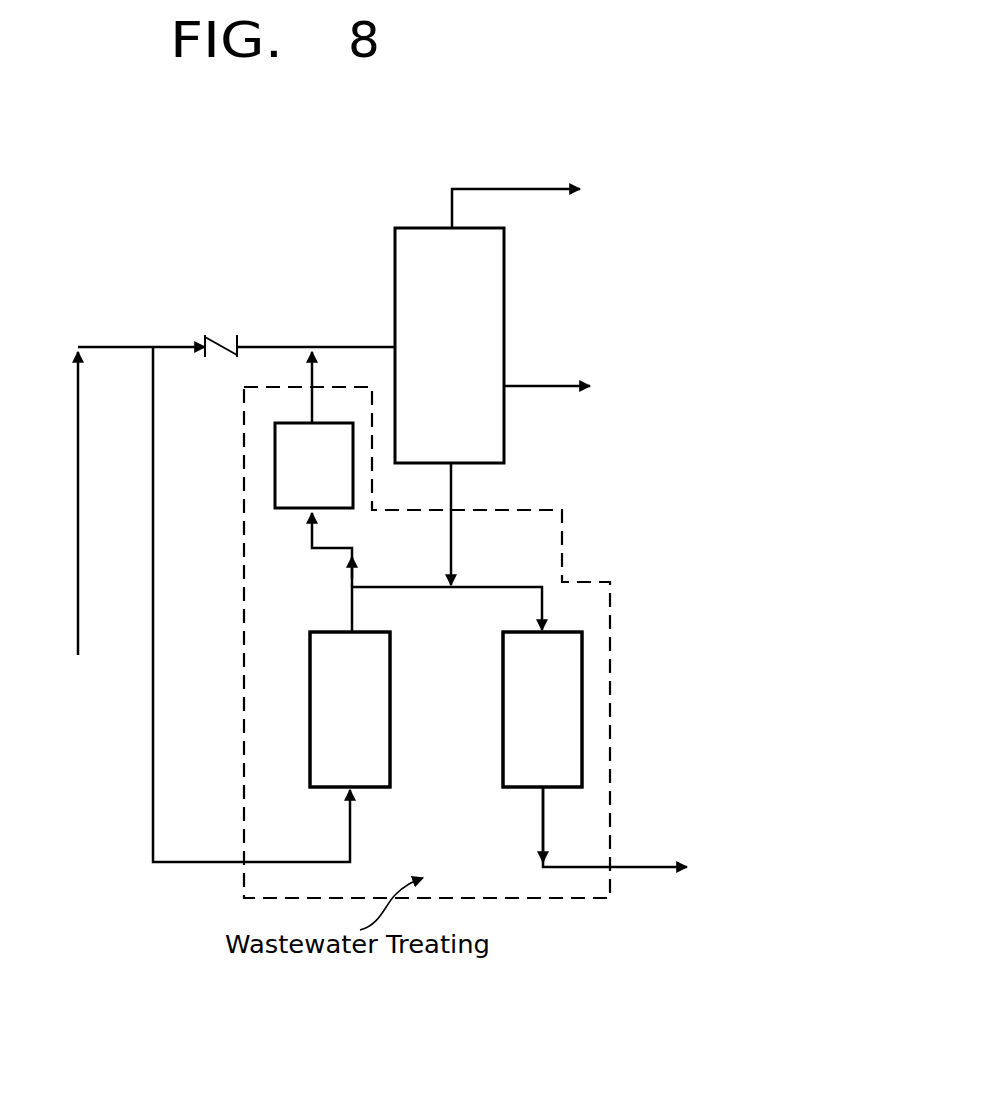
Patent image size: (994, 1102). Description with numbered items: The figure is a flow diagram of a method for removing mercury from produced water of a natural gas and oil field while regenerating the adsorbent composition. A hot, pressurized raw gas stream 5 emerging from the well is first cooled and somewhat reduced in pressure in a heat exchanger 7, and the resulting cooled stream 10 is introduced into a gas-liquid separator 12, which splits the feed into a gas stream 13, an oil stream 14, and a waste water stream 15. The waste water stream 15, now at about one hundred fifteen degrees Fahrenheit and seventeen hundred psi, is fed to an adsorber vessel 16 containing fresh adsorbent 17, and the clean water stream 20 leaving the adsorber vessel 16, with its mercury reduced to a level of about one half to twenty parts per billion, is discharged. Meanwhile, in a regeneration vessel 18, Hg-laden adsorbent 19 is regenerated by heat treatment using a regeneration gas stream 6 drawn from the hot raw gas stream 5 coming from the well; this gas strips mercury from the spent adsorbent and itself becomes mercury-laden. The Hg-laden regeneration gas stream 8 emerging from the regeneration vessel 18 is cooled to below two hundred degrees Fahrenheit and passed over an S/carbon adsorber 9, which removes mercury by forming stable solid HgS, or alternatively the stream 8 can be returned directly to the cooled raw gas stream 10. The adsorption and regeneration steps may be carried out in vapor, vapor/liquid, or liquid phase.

The raw gas stream 5 is at (78, 463).
The regeneration gas stream 6 is at (153, 642).
The heat exchanger 7 is at (222, 341).
The Hg-laden regeneration gas stream 8 is at (352, 588).
The S/carbon adsorber 9 is at (275, 462).
The cooled stream 10 is at (368, 345).
The gas-liquid separator 12 is at (504, 265).
The gas stream 13 is at (530, 188).
The oil stream 14 is at (545, 385).
The waste water stream 15 is at (455, 490).
The adsorber vessel 16 is at (582, 647).
The fresh adsorbent 17 is at (562, 750).
The regeneration vessel 18 is at (310, 650).
The Hg-laden adsorbent 19 is at (326, 760).
The clean water stream 20 is at (648, 866).